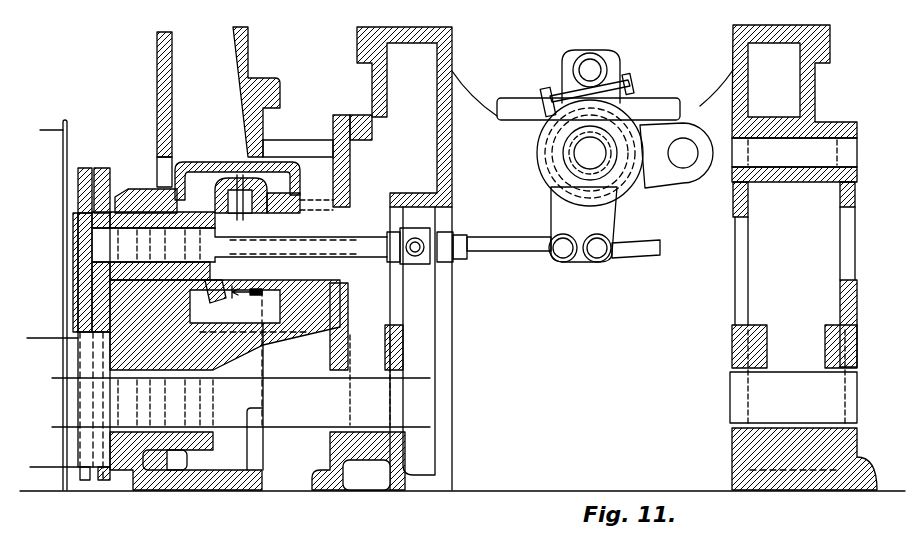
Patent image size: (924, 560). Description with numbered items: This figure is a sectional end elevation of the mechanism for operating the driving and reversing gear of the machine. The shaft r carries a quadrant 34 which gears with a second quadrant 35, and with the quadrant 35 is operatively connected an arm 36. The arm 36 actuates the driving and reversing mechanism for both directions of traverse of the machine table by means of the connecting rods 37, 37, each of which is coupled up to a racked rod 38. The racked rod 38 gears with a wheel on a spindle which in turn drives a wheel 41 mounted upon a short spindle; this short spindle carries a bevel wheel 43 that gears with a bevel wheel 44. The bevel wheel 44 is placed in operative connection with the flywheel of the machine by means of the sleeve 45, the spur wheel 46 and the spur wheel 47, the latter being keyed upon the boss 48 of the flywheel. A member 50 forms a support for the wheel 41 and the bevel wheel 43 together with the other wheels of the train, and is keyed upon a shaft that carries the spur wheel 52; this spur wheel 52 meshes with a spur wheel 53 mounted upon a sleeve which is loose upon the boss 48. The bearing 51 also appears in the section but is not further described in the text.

The quadrant 34 is at (660, 178).
The quadrant 35 is at (625, 178).
The arm 36 is at (562, 212).
The connecting rods 37 is at (510, 248).
The racked rod 38 is at (364, 250).
The wheel 41 is at (345, 195).
The bevel wheel 43 is at (228, 188).
The bevel wheel 44 is at (220, 290).
The sleeve 45 is at (138, 195).
The spur wheel 46 is at (104, 168).
The spur wheel 47 is at (110, 480).
The boss 48 is at (103, 452).
The member 50 is at (276, 193).
The bearing 51 is at (158, 200).
The spur wheel 52 is at (86, 168).
The spur wheel 53 is at (80, 332).
The shaft r is at (686, 158).